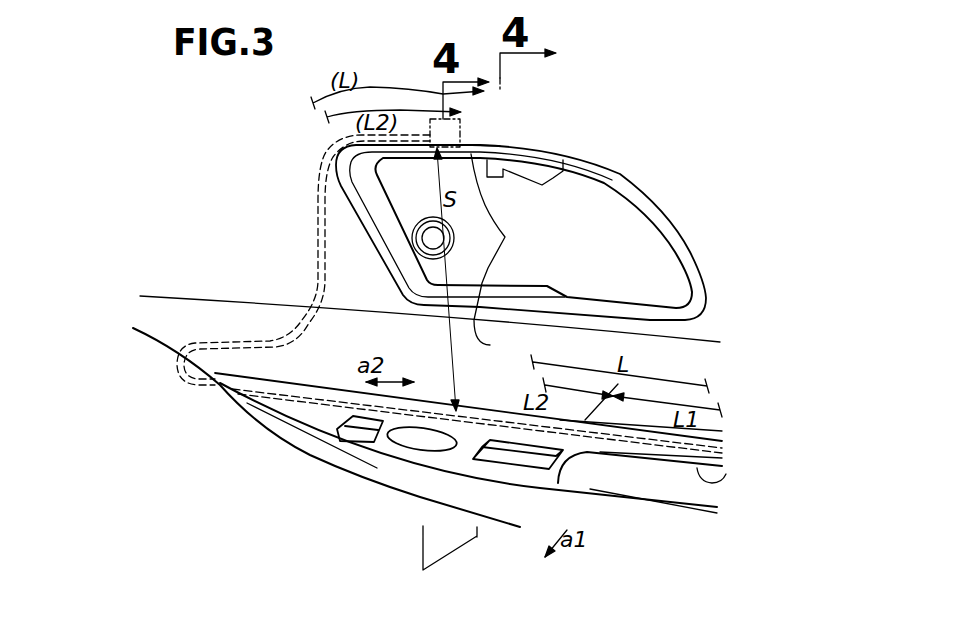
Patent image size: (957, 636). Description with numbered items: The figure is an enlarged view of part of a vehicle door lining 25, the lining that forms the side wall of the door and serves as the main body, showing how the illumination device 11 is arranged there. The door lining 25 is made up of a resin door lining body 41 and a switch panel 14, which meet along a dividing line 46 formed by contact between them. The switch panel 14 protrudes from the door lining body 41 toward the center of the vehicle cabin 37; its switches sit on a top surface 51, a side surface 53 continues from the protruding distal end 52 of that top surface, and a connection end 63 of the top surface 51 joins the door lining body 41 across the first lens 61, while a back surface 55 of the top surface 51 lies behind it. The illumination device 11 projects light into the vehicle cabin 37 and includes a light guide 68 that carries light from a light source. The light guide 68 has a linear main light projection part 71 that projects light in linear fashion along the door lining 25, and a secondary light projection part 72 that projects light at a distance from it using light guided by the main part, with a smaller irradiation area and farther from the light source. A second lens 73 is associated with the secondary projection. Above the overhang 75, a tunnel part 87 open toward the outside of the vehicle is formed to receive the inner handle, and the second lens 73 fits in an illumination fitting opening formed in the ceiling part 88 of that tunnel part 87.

The illumination device 11 is at (262, 213).
The switch panel 14 is at (294, 406).
The door lining 25 is at (212, 218).
The vehicle cabin 37 is at (116, 518).
The door lining body 41 is at (229, 267).
The dividing line 46 is at (585, 419).
The top surface 51 is at (540, 420).
The protruding distal end 52 is at (533, 483).
The side surface 53 is at (433, 492).
The back surface 55 is at (713, 483).
The first lens 61 is at (725, 440).
The connection end 63 is at (640, 437).
The light guide 68 is at (312, 234).
The linear main light projection part 71 is at (343, 406).
The secondary light projection part 72 is at (427, 130).
The second lens 73 is at (470, 127).
The overhang 75 is at (470, 437).
The tunnel part 87 is at (393, 202).
The ceiling part 88 is at (495, 188).